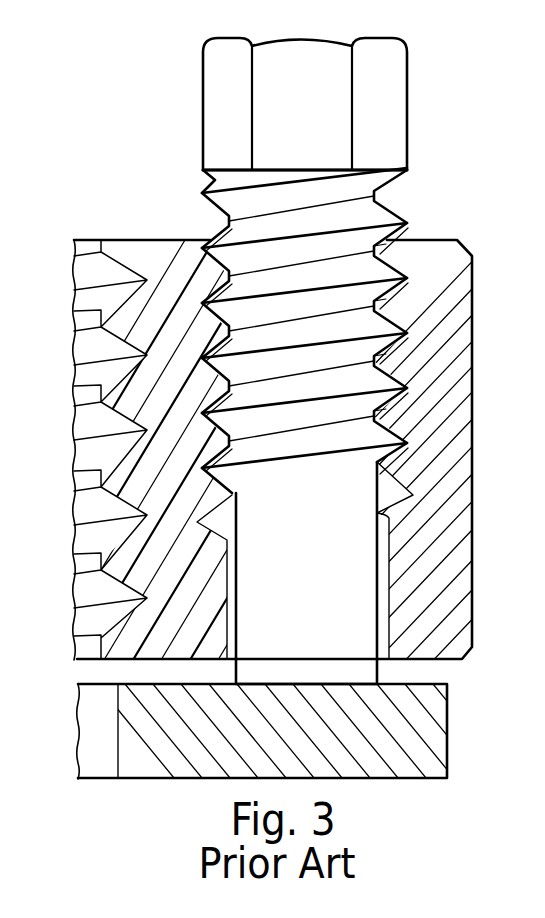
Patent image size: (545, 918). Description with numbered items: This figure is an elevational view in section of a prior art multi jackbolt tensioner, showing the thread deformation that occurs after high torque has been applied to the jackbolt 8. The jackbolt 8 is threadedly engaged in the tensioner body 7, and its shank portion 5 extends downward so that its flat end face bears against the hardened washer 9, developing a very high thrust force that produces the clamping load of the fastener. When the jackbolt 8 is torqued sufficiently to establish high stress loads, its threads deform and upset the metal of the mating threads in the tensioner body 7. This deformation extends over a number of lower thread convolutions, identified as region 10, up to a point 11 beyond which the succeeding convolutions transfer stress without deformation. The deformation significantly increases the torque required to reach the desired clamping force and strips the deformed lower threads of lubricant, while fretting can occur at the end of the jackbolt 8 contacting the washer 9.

The jackbolt 8 is at (383, 116).
The shank portion 5 is at (287, 597).
The tensioner body 7 is at (473, 513).
The point where succeeding convolutions transfer stress without deformation 11 is at (397, 317).
The deformed thread convolutions 10 is at (405, 460).
The hardened washer 9 is at (427, 734).